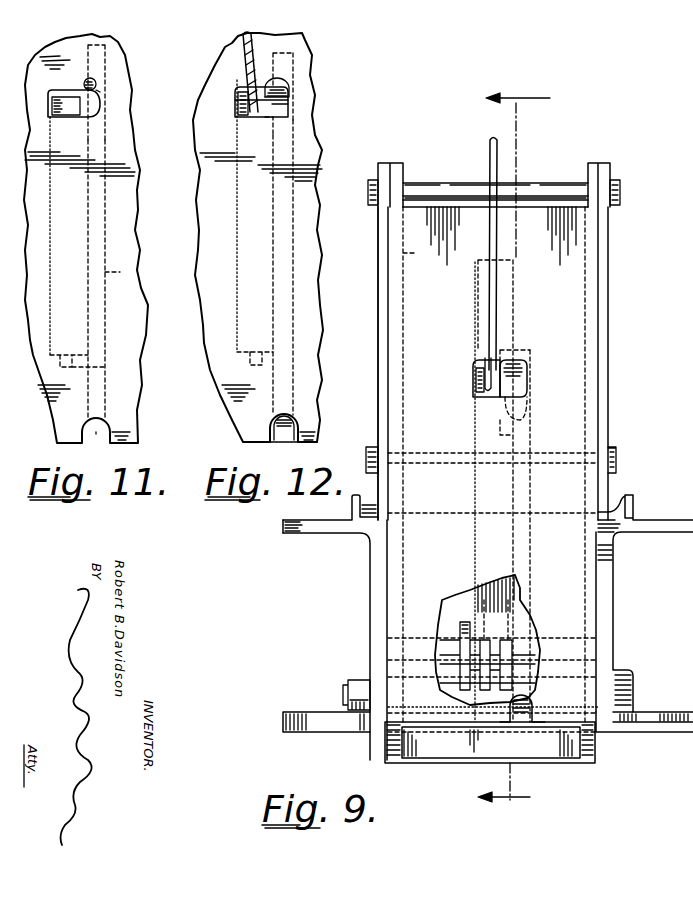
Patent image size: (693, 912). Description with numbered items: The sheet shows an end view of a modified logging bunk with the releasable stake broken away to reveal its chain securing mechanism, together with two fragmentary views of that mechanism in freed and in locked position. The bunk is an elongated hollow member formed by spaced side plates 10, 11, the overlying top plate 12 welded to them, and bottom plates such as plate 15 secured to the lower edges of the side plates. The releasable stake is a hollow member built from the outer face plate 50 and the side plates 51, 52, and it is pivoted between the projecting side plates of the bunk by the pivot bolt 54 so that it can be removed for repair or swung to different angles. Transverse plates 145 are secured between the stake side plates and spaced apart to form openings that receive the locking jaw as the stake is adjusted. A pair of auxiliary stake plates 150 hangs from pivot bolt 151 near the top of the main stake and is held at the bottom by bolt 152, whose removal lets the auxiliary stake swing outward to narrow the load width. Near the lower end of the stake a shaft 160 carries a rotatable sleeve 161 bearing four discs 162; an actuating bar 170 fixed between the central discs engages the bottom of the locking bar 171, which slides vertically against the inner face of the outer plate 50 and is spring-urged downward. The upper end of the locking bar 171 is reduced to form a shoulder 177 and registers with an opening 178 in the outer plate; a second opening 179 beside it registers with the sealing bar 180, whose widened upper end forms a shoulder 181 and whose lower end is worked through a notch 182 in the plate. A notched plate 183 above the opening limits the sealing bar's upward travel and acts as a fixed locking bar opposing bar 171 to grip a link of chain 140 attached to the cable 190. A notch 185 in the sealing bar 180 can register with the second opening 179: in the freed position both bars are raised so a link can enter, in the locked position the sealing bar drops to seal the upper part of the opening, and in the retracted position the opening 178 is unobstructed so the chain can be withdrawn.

In FIG. 9, the side plate 10 is at (613, 558).
In FIG. 9, the side plate 11 is at (370, 558).
In FIG. 9, the top plate 12 is at (618, 496).
In FIG. 9, the bottom plate 15 is at (632, 732).
In FIG. 11, the outer face plate 50 is at (132, 418).
In FIG. 9, the outer face plate 50 is at (420, 388).
In FIG. 9, the side plate of stake 51 is at (419, 464).
In FIG. 9, the side plate of stake 52 is at (585, 289).
In FIG. 9, the pivot bolt 54 is at (343, 692).
In FIG. 12, the chain 140 is at (240, 90).
In FIG. 9, the chain 140 is at (480, 364).
In FIG. 9, the transverse plates 145 is at (442, 750).
In FIG. 9, the auxiliary stake plates 150 is at (385, 350).
In FIG. 9, the pivot bolt 151 is at (620, 190).
In FIG. 9, the bolt 152 is at (616, 466).
In FIG. 9, the shaft 160 is at (390, 638).
In FIG. 9, the sleeve 161 is at (440, 635).
In FIG. 9, the discs 162 is at (506, 625).
In FIG. 11, the actuating bar 170 is at (105, 367).
In FIG. 12, the actuating bar 170 is at (250, 363).
In FIG. 11, the locking bar 171 is at (88, 242).
In FIG. 12, the locking bar 171 is at (237, 178).
In FIG. 9, the locking bar 171 is at (475, 540).
In FIG. 11, the shoulder 177 is at (88, 138).
In FIG. 12, the shoulder 177 is at (273, 135).
In FIG. 9, the shoulder 177 is at (505, 433).
In FIG. 11, the opening 178 is at (56, 80).
In FIG. 12, the opening 178 is at (236, 106).
In FIG. 9, the opening 178 is at (474, 392).
In FIG. 11, the second opening 179 is at (96, 83).
In FIG. 12, the second opening 179 is at (290, 88).
In FIG. 9, the second opening 179 is at (527, 365).
In FIG. 11, the sealing bar 180 is at (120, 272).
In FIG. 12, the sealing bar 180 is at (298, 442).
In FIG. 9, the sealing bar 180 is at (526, 725).
In FIG. 11, the shoulder 181 is at (88, 128).
In FIG. 12, the shoulder 181 is at (273, 133).
In FIG. 11, the notch 182 is at (96, 438).
In FIG. 12, the notch 182 is at (272, 445).
In FIG. 9, the notch 182 is at (508, 730).
In FIG. 9, the notched plate 183 is at (513, 300).
In FIG. 11, the notch 185 is at (100, 91).
In FIG. 12, the notch 185 is at (289, 94).
In FIG. 9, the notch 185 is at (527, 400).
In FIG. 12, the cable 190 is at (243, 48).
In FIG. 9, the cable 190 is at (490, 152).